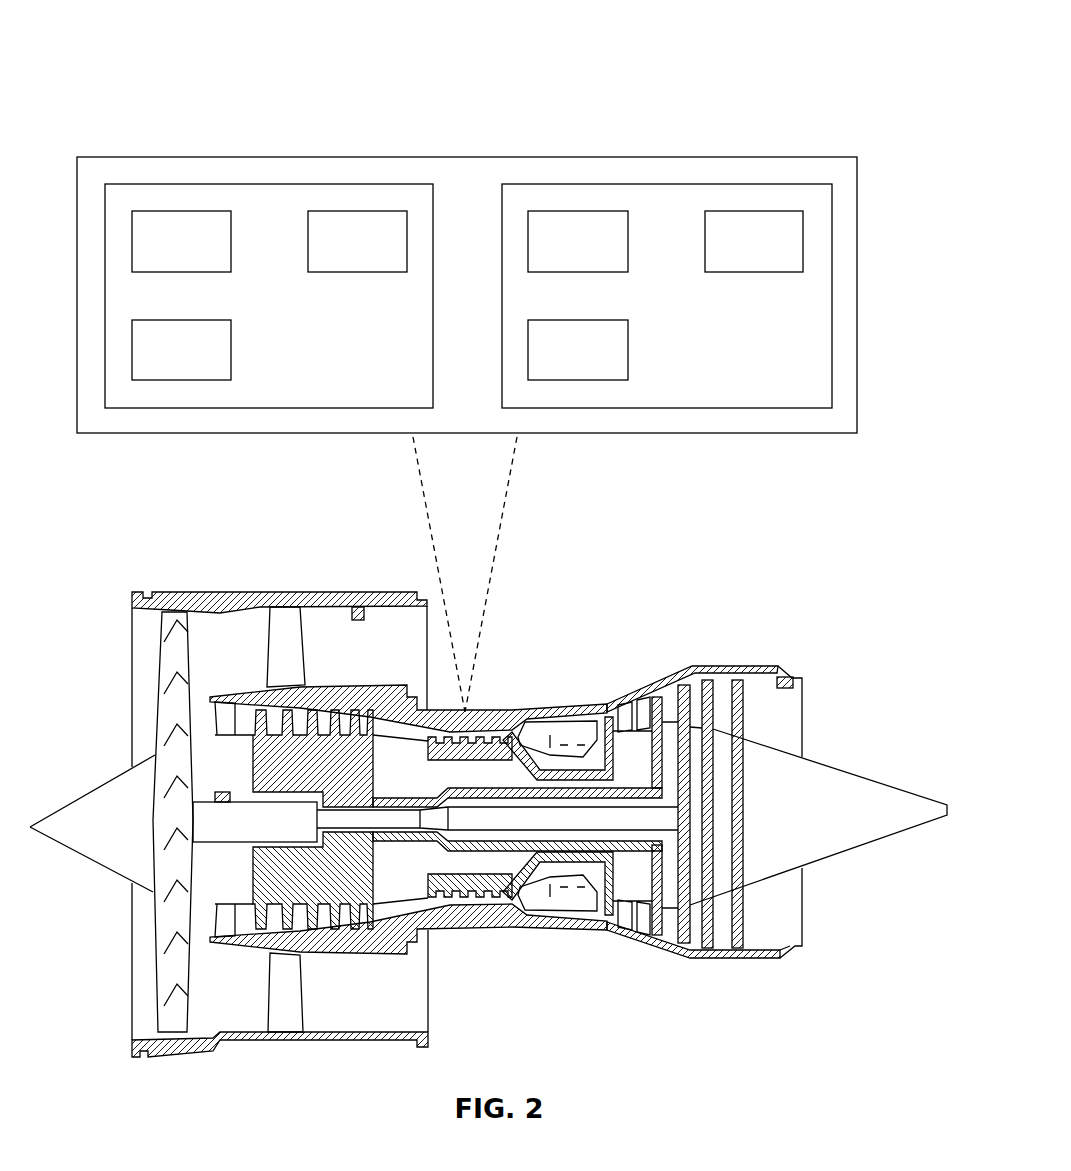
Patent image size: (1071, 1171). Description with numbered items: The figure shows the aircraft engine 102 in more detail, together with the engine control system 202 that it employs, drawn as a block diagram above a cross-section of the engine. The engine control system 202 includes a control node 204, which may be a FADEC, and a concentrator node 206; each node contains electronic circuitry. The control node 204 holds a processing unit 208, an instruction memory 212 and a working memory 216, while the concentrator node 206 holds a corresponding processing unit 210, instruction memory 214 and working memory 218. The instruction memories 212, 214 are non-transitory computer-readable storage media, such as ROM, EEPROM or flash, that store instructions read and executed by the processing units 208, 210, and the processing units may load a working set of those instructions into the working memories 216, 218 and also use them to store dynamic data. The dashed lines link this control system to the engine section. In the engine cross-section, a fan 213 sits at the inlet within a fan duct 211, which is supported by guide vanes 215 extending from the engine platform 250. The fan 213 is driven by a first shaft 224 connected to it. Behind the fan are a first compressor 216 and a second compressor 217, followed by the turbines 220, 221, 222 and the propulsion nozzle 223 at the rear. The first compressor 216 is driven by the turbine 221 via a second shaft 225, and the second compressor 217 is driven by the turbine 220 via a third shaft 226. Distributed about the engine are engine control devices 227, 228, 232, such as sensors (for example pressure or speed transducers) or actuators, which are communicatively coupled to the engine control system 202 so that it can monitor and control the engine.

The aircraft engine 102 is at (847, 47).
The engine control system 202 is at (137, 156).
The control node 204 is at (283, 184).
The concentrator node 206 is at (667, 184).
The processing unit 208 is at (183, 211).
The processing unit 210 is at (578, 211).
The instruction memory 212 is at (355, 211).
The instruction memory 214 is at (753, 211).
The working memory / first compressor 216 is at (231, 352).
The working memory 218 is at (628, 352).
The fan duct 211 is at (213, 1042).
The fan 213 is at (165, 651).
The guide vanes 215 is at (285, 625).
The second compressor 217 is at (497, 887).
The turbine 220 is at (610, 722).
The turbine 221 is at (656, 700).
The turbine 222 is at (707, 682).
The propulsion nozzle 223 is at (803, 730).
The first shaft 224 is at (215, 888).
The second shaft 225 is at (640, 846).
The third shaft 226 is at (558, 858).
The engine control device 227 is at (356, 607).
The engine control device 228 is at (787, 680).
The engine control device 232 is at (228, 797).
The engine platform 250 is at (510, 710).